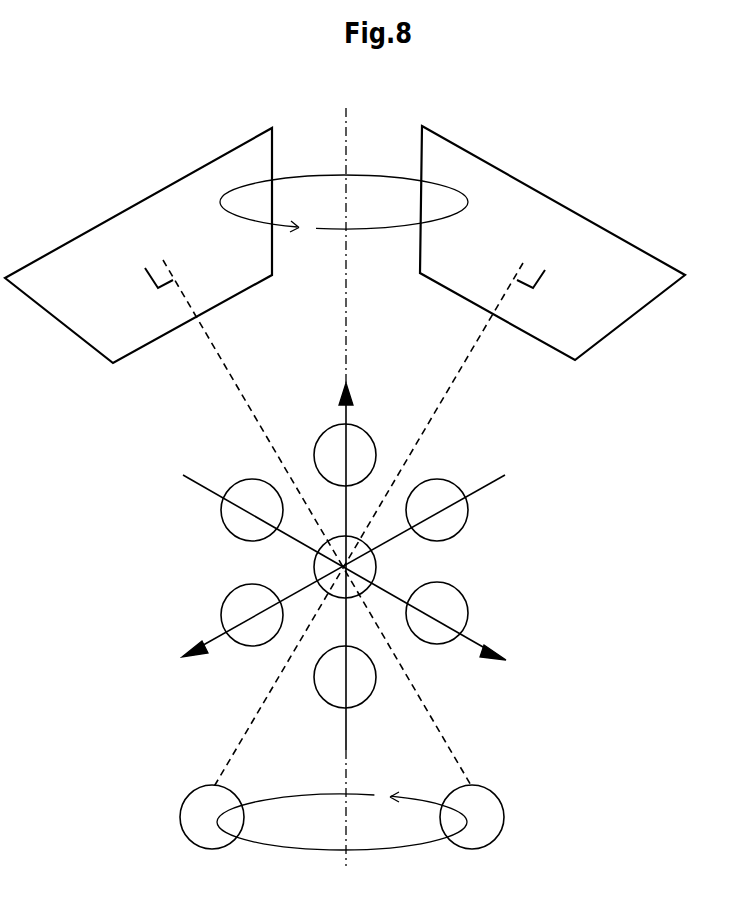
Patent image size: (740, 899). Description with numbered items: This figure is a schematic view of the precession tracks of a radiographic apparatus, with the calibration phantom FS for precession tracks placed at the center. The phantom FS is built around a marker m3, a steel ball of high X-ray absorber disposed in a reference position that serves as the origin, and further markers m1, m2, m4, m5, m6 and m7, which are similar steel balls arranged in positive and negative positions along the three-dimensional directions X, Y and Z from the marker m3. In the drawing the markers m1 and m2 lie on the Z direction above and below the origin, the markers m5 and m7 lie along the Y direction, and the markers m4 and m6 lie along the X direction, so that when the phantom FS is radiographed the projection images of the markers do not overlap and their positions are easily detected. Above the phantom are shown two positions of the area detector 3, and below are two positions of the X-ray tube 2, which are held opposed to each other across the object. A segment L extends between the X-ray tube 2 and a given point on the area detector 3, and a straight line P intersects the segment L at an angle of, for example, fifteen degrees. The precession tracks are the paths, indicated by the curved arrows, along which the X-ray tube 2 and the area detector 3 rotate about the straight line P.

The X-ray tube 2 is at (185, 802).
The area detector 3 is at (82, 344).
The straight line P is at (346, 322).
The segment L is at (447, 390).
The calibration phantom FS is at (498, 535).
The marker m1 is at (320, 437).
The marker m2 is at (348, 707).
The marker m3 is at (376, 563).
The marker m4 is at (437, 480).
The marker m5 is at (233, 540).
The marker m6 is at (237, 650).
The marker m7 is at (460, 600).
The X direction X is at (326, 575).
The Y direction Y is at (357, 574).
The Z direction Z is at (363, 565).